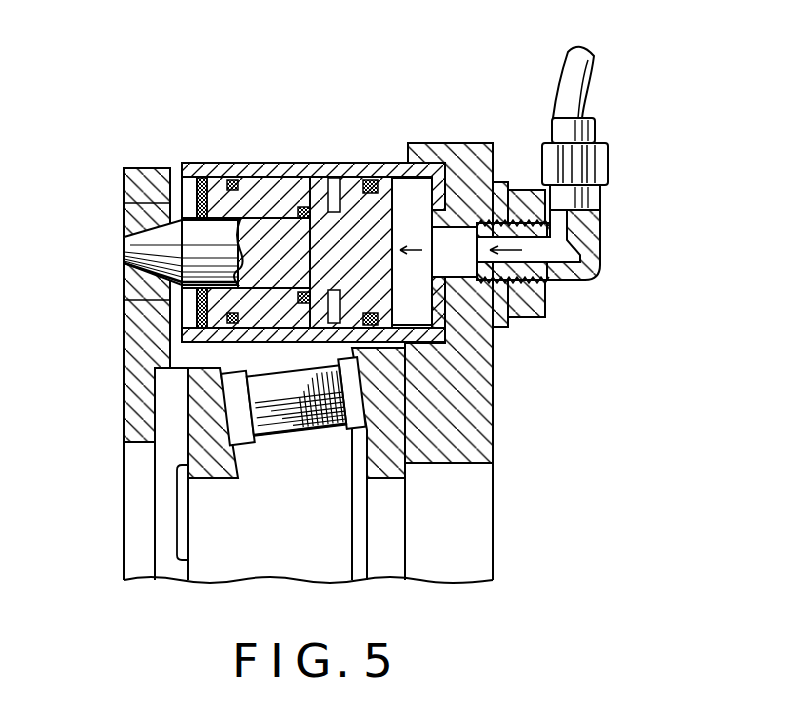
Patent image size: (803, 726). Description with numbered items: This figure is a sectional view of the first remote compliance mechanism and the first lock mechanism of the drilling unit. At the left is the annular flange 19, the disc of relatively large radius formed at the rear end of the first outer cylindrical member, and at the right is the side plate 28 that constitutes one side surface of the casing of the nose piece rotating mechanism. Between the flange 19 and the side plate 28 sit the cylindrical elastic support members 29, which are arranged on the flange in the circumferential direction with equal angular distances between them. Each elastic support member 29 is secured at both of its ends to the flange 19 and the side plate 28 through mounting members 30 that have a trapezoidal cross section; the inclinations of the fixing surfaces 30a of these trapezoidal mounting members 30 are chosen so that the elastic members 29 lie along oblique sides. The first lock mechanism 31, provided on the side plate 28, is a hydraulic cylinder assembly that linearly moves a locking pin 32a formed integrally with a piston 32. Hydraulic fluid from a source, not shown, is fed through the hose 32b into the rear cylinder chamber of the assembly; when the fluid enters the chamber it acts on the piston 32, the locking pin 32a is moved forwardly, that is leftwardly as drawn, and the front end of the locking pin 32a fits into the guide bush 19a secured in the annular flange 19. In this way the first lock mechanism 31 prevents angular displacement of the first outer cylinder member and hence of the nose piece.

The annular flange 19 is at (130, 364).
The guide bush 19a is at (130, 223).
The side plate 28 is at (494, 418).
The elastic support member 29 is at (285, 437).
The mounting member 30 is at (217, 478).
The fixing surface 30a is at (228, 400).
The first lock mechanism 31 is at (313, 168).
The piston 32 is at (389, 175).
The locking pin 32a is at (265, 228).
The hose 32b is at (593, 81).